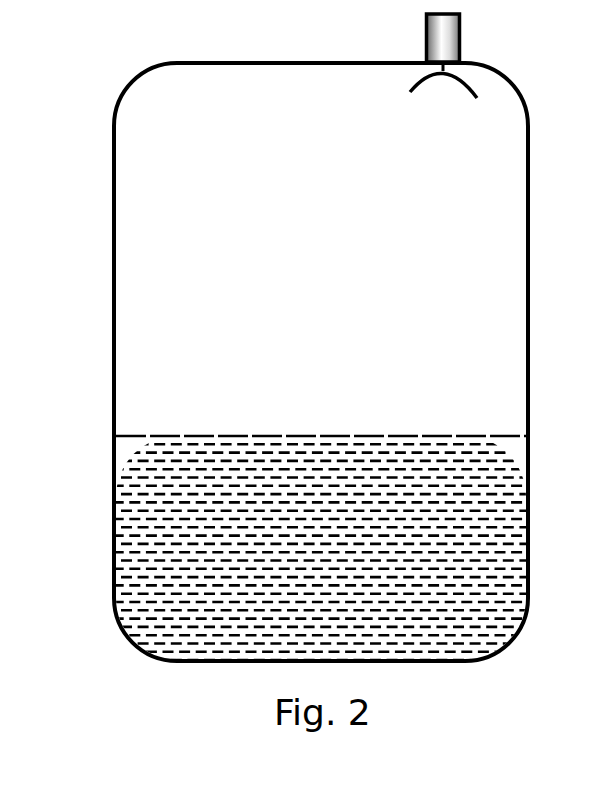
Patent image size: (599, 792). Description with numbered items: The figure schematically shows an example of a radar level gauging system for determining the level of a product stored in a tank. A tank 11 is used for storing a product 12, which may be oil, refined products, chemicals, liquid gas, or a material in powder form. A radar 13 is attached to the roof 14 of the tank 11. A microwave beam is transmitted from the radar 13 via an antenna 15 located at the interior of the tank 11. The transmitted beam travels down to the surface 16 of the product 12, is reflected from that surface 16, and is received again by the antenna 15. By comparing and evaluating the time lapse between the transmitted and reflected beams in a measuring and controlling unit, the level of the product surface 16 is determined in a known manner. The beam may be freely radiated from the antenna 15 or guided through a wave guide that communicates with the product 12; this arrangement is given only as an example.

The tank 11 is at (112, 220).
The product 12 is at (178, 506).
The radar 13 is at (460, 45).
The roof 14 is at (262, 66).
The antenna 15 is at (412, 89).
The surface 16 is at (318, 433).